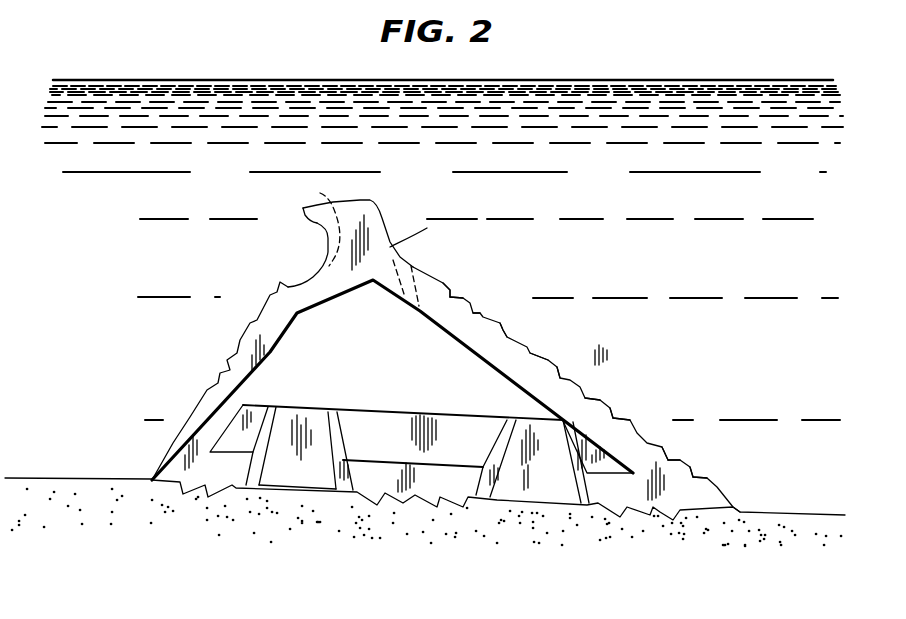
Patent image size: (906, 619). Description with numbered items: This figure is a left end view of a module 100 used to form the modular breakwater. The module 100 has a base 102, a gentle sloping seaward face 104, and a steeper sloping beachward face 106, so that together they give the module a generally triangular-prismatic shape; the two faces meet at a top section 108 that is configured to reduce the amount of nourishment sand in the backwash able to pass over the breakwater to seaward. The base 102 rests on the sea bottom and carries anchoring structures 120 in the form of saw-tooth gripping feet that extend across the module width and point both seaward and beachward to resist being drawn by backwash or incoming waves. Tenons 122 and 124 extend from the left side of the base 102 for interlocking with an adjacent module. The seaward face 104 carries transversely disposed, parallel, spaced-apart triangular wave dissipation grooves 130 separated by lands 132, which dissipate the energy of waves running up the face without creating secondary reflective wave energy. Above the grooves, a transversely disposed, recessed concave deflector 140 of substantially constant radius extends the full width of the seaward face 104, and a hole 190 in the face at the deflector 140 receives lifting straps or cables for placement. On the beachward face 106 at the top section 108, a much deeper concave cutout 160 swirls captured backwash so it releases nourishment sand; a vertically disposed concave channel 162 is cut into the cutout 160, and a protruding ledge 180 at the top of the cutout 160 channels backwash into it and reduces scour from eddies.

The module 100 is at (580, 240).
The base 102 is at (494, 512).
The seaward face 104 is at (560, 342).
The beachward face 106 is at (212, 353).
The top section 108 is at (395, 205).
The anchoring structures 120 is at (183, 490).
The tenon 122 is at (297, 480).
The tenon 124 is at (541, 490).
The wave dissipation grooves 130 is at (481, 313).
The lands 132 is at (503, 324).
The deflector 140 is at (427, 228).
The concave cutout 160 is at (302, 280).
The concave channel 162 is at (320, 193).
The protruding ledge 180 is at (303, 208).
The hole 190 is at (413, 261).